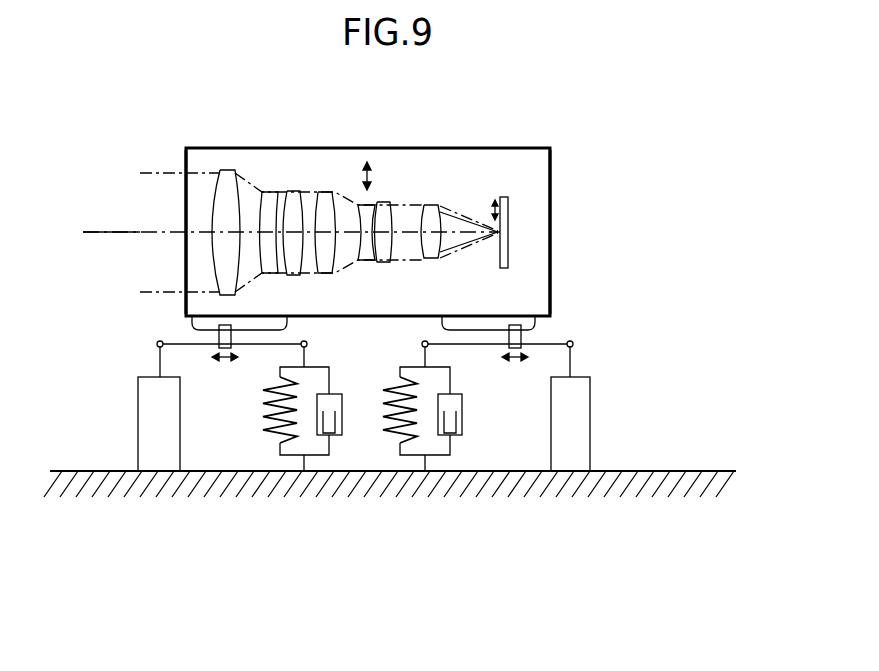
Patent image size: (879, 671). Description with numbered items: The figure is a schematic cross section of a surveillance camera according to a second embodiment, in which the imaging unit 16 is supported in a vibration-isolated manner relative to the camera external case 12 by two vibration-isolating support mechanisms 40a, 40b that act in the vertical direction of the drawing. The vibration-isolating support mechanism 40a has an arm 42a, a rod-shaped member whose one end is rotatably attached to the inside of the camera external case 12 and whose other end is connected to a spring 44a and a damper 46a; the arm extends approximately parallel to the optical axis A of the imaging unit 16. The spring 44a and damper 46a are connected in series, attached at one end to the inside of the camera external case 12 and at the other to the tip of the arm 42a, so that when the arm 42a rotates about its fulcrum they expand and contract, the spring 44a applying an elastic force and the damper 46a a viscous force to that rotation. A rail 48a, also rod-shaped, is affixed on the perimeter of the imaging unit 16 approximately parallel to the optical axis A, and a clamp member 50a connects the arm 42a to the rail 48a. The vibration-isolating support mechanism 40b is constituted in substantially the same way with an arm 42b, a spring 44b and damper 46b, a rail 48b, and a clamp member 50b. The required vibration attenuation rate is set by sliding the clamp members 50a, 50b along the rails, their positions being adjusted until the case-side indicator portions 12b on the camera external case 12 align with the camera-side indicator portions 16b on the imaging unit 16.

The camera external case 12 is at (80, 470).
The case-side indicator portion 12b is at (184, 158).
The imaging unit 16 is at (550, 255).
The camera-side indicator portion 16b is at (188, 158).
The optical axis A is at (83, 232).
The vibration-isolating support mechanism 40a is at (217, 386).
The vibration-isolating support mechanism 40b is at (552, 415).
The arm 42a is at (192, 346).
The arm 42b is at (477, 347).
The spring 44a is at (267, 422).
The spring 44b is at (392, 443).
The damper 46a is at (343, 410).
The damper 46b is at (462, 417).
The rail 48a is at (287, 326).
The rail 48b is at (530, 328).
The clamp member 50a is at (219, 338).
The clamp member 50b is at (522, 337).